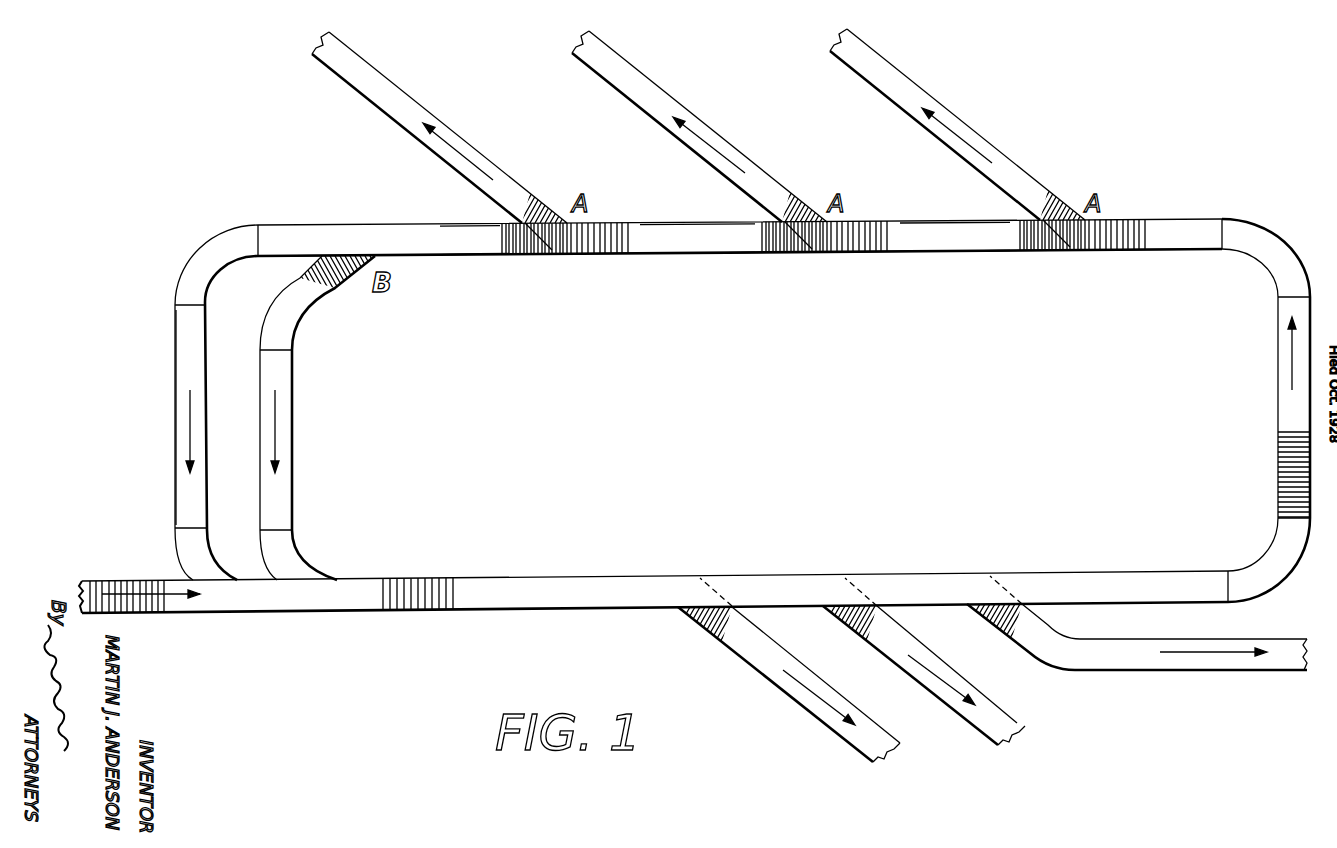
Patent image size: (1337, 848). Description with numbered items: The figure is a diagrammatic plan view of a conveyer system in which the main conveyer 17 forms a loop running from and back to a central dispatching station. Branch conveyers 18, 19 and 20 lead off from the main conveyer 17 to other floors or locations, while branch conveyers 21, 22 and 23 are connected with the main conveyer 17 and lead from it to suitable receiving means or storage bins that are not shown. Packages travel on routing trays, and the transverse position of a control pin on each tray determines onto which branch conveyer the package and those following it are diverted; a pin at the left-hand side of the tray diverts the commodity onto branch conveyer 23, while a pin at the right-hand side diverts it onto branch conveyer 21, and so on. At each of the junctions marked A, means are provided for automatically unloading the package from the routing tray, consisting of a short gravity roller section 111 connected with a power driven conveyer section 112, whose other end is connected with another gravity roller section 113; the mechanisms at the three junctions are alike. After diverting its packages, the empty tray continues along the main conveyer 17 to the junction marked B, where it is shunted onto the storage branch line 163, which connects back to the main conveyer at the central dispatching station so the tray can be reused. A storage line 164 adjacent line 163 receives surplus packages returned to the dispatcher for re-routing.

The main conveyer 17 is at (1183, 227).
The branch conveyer 18 is at (748, 650).
The branch conveyer 19 is at (910, 667).
The branch conveyer 20 is at (1113, 658).
The branch conveyer 21 is at (932, 102).
The branch conveyer 22 is at (655, 100).
The branch conveyer 23 is at (397, 100).
The gravity roller section 111 is at (607, 240).
The power driven conveyer section 112 is at (513, 247).
The gravity roller section 113 is at (470, 245).
The storage branch line 163 is at (288, 400).
The storage line 164 is at (183, 392).